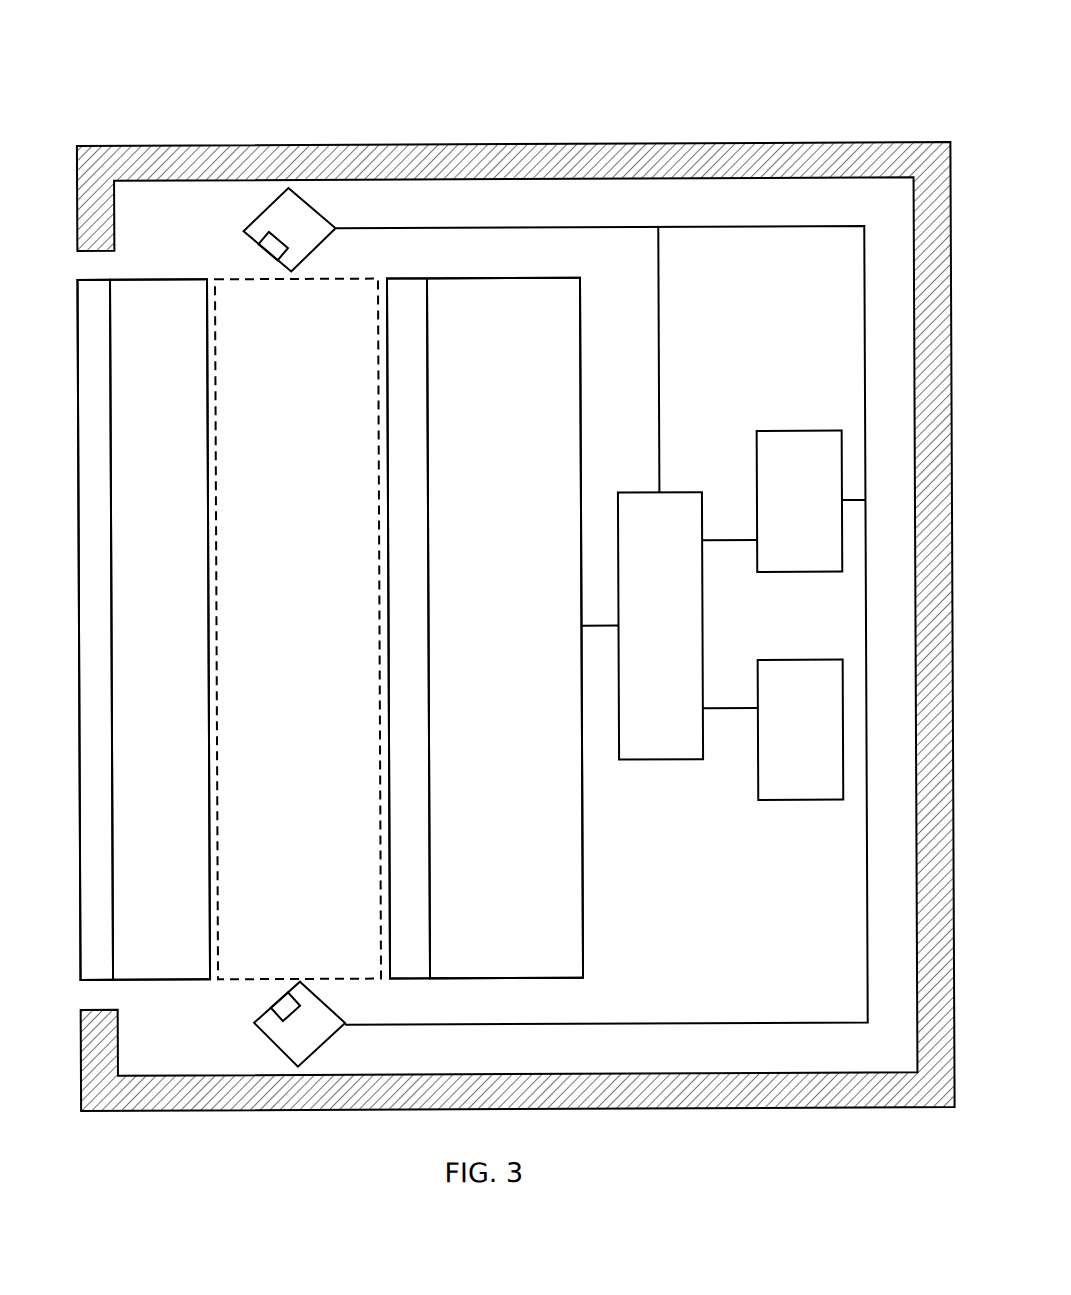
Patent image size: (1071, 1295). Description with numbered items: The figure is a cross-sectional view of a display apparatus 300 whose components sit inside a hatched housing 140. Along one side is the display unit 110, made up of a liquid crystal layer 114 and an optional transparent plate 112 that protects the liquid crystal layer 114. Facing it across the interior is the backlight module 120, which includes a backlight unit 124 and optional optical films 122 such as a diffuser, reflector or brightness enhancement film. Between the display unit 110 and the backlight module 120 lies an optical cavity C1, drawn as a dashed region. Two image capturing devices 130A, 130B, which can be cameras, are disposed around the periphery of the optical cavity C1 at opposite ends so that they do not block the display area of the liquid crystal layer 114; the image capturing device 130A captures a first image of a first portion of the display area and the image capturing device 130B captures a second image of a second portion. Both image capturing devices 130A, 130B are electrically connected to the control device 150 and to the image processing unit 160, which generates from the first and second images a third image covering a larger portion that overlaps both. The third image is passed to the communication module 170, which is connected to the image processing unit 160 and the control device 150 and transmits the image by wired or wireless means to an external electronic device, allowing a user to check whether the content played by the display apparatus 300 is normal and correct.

The display apparatus 300 is at (958, 25).
The display unit 110 is at (61, 90).
The transparent plate 112 is at (79, 318).
The liquid crystal layer 114 is at (148, 278).
The backlight module 120 is at (489, 88).
The optical films 122 is at (406, 278).
The backlight unit 124 is at (490, 278).
The image capturing device 130A is at (283, 194).
The image capturing device 130B is at (275, 1046).
The housing 140 is at (828, 144).
The control device 150 is at (660, 760).
The image processing unit 160 is at (791, 432).
The communication module 170 is at (798, 801).
The optical cavity C1 is at (362, 278).